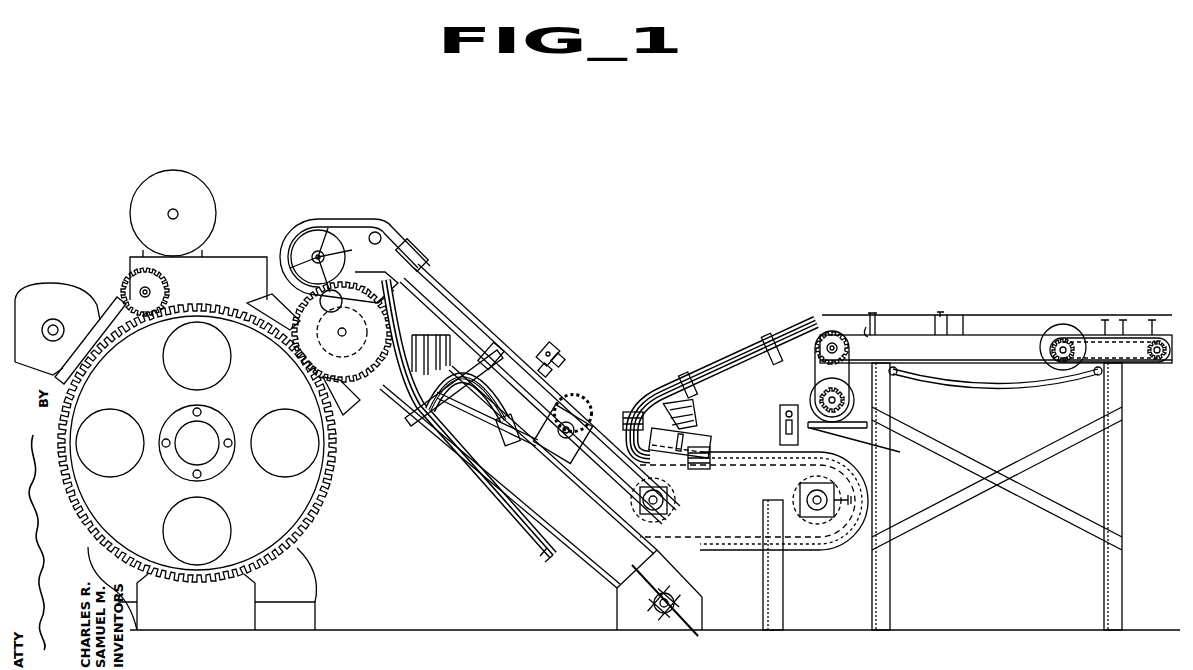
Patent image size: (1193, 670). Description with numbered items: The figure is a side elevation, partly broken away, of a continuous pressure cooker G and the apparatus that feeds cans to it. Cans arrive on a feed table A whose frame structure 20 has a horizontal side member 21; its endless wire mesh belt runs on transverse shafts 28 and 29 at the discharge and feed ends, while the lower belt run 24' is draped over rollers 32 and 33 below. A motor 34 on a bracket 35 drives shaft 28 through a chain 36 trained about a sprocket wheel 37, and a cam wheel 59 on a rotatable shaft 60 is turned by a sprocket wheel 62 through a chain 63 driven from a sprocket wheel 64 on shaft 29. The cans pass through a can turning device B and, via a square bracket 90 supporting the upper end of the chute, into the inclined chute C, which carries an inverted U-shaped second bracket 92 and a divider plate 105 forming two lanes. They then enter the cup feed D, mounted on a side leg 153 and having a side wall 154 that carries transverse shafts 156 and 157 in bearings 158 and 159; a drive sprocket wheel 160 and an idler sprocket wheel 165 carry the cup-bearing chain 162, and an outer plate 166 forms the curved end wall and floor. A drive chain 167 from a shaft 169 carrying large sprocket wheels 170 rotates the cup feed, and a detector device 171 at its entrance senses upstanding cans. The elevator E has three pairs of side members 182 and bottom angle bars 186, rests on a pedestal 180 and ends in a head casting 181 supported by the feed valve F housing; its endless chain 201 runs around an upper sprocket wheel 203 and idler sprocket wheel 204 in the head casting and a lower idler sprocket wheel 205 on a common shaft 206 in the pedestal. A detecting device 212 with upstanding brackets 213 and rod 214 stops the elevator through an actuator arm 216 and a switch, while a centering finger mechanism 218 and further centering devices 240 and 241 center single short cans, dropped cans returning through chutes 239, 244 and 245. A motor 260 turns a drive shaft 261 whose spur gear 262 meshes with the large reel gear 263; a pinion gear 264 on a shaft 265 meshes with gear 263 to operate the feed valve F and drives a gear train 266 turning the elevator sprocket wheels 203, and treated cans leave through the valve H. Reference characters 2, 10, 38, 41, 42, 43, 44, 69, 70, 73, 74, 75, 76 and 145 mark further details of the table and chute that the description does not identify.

The pressure cooker G is at (328, 507).
The discharge valve H is at (53, 283).
The feed valve F is at (372, 386).
The elevator E is at (497, 327).
The cup feed D is at (812, 556).
The can feed chute C is at (661, 380).
The can turning device B is at (788, 333).
The feed table A is at (1023, 320).
The section line 10 is at (470, 177).
The section line 2 is at (770, 268).
The frame structure 20 is at (1100, 553).
The horizontal side member 21 is at (978, 359).
The lower run of belt 24' is at (995, 392).
The transverse shaft 28 is at (832, 342).
The transverse shaft 29 is at (1159, 360).
The roller 32 is at (1096, 376).
The roller 33 is at (897, 375).
The motor 34 is at (810, 400).
The bracket 35 is at (867, 447).
The chain 36 is at (820, 392).
The sprocket wheel 37 is at (822, 382).
The bolt 38 is at (1121, 320).
The bolt 41 is at (1152, 320).
The bolt 42 is at (1106, 322).
The table rail 43 is at (1006, 325).
The guide 44 is at (1050, 330).
The cam wheel 59 is at (1053, 337).
The rotatable shaft 60 is at (1060, 360).
The sprocket wheel 62 is at (1052, 350).
The chain 63 is at (1067, 360).
The sprocket wheel 64 is at (1153, 356).
The guide rail 69 is at (955, 324).
The guide rail 70 is at (910, 326).
The bolt 73 is at (940, 316).
The bolt 74 is at (876, 315).
The bracket 75 is at (941, 330).
The bracket 76 is at (868, 337).
The bracket 90 is at (766, 344).
The second bracket 92 is at (688, 374).
The divider plate 105 is at (718, 362).
The funnel 145 is at (702, 411).
The side leg 153 is at (773, 583).
The side wall 154 is at (735, 504).
The transverse shaft 156 is at (654, 492).
The transverse shaft 157 is at (817, 512).
The bearing 158 is at (666, 505).
The bearing 159 is at (825, 488).
The drive sprocket wheel 160 is at (672, 492).
The chain 162 is at (738, 471).
The idler sprocket wheel 165 is at (812, 497).
The outer plate 166 is at (855, 500).
The drive chain 167 is at (578, 460).
The shaft 169 is at (560, 444).
The large sprocket wheel 170 is at (570, 452).
The detector device 171 is at (778, 423).
The pedestal 180 is at (628, 610).
The head casting 181 is at (388, 265).
The frame side members 182 is at (421, 300).
The angle bar 186 is at (471, 516).
The endless chain 201 is at (345, 227).
The sprocket wheel 203 is at (305, 219).
The idler sprocket wheel 204 is at (384, 232).
The idler sprocket wheel 205 is at (660, 616).
The common shaft 206 is at (692, 632).
The detecting device 212 is at (560, 343).
The upstanding bracket 213 is at (560, 373).
The transversely extending rod 214 is at (556, 362).
The actuator arm 216 is at (557, 346).
The centering finger mechanism 218 is at (512, 362).
The can return chute 239 is at (482, 438).
The can centering device 240 is at (484, 340).
The can centering device 241 is at (418, 262).
The chute 244 is at (458, 318).
The chute 245 is at (442, 305).
The motor 260 is at (196, 204).
The drive shaft 261 is at (149, 289).
The spur gear 262 is at (165, 290).
The large gear 263 is at (228, 313).
The pinion gear 264 is at (314, 362).
The shaft 265 is at (338, 334).
The gear train 266 is at (310, 255).